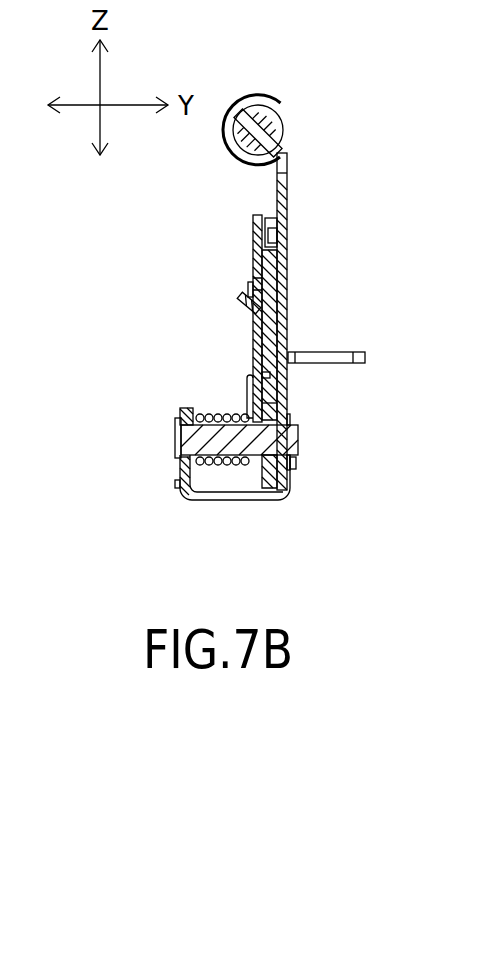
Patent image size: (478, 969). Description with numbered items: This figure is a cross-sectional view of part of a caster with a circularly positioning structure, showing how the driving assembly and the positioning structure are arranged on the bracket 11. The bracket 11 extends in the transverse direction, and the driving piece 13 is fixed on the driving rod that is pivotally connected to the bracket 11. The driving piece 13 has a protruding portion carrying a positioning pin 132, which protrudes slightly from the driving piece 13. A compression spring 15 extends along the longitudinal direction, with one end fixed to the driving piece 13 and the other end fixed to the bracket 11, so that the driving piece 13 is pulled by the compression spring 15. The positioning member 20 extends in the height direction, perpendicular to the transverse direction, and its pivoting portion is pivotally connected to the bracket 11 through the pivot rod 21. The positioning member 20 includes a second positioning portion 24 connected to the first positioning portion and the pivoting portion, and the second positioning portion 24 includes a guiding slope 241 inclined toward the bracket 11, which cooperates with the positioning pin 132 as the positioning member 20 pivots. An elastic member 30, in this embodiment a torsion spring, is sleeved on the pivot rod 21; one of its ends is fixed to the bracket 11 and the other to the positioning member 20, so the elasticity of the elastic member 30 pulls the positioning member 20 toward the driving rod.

The bracket 11 is at (283, 203).
The driving piece 13 is at (273, 294).
The compression spring 15 is at (272, 104).
The positioning member 20 is at (250, 222).
The pivot rod 21 is at (176, 437).
The second positioning portion 24 is at (250, 310).
The elastic member 30 is at (233, 460).
The positioning pin 132 is at (254, 282).
The guiding slope 241 is at (249, 287).